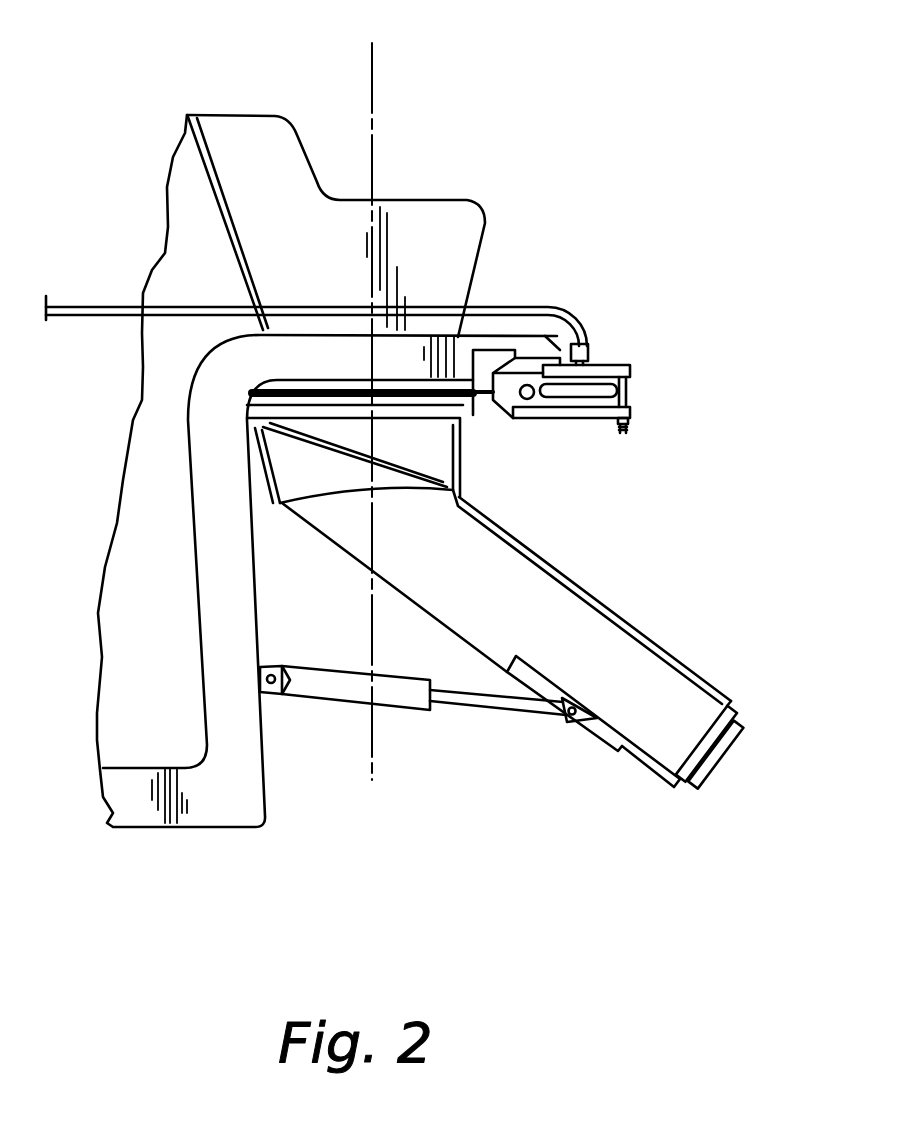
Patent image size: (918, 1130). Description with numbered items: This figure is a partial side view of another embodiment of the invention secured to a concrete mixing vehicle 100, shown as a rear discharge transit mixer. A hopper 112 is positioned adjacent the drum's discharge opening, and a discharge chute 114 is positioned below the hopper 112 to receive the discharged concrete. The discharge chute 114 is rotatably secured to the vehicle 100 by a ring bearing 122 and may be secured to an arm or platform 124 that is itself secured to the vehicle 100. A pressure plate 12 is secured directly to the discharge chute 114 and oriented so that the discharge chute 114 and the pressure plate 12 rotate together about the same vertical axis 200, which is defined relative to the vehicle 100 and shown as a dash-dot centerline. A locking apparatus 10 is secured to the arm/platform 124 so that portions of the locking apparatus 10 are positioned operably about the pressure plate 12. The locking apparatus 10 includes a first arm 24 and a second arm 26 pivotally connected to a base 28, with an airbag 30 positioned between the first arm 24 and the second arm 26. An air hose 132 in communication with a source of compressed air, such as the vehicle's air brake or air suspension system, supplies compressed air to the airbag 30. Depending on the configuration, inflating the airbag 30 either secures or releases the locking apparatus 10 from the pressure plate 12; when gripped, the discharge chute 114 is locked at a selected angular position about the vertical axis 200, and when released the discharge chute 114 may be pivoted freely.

The vertical axis 200 is at (374, 66).
The hopper 112 is at (486, 228).
The arm or platform 124 is at (493, 348).
The air hose 132 is at (562, 311).
The base 28 is at (575, 343).
The second arm 26 is at (632, 370).
The airbag 30 is at (628, 390).
The first arm 24 is at (632, 410).
The locking apparatus 10 is at (577, 418).
The pressure plate 12 is at (488, 400).
The ring bearing 122 is at (478, 400).
The discharge chute 114 is at (607, 652).
The mixing vehicle 100 is at (300, 838).